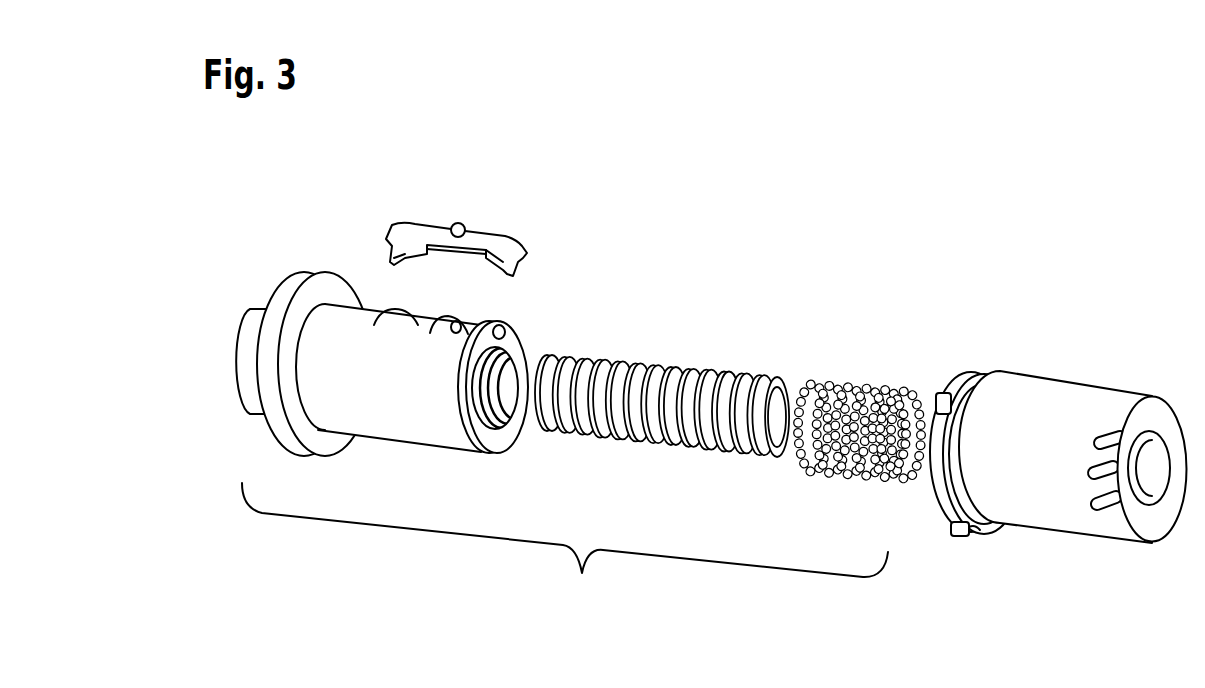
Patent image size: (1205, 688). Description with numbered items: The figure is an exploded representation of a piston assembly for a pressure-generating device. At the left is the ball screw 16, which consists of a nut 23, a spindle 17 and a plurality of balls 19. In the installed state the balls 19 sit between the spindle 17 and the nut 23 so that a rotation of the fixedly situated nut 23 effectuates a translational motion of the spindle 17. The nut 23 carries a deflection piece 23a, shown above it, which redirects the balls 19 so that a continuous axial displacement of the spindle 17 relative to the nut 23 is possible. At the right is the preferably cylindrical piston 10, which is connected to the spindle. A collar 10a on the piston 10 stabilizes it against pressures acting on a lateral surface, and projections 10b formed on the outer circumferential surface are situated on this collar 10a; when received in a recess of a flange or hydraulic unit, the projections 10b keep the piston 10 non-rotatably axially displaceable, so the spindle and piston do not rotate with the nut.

The piston 10 is at (1051, 470).
The collar 10a is at (945, 500).
The projections 10b is at (941, 397).
The ball screw 16 is at (565, 548).
The spindle 17 is at (683, 377).
The balls 19 is at (852, 392).
The nut 23 is at (290, 300).
The deflection piece 23a is at (462, 224).